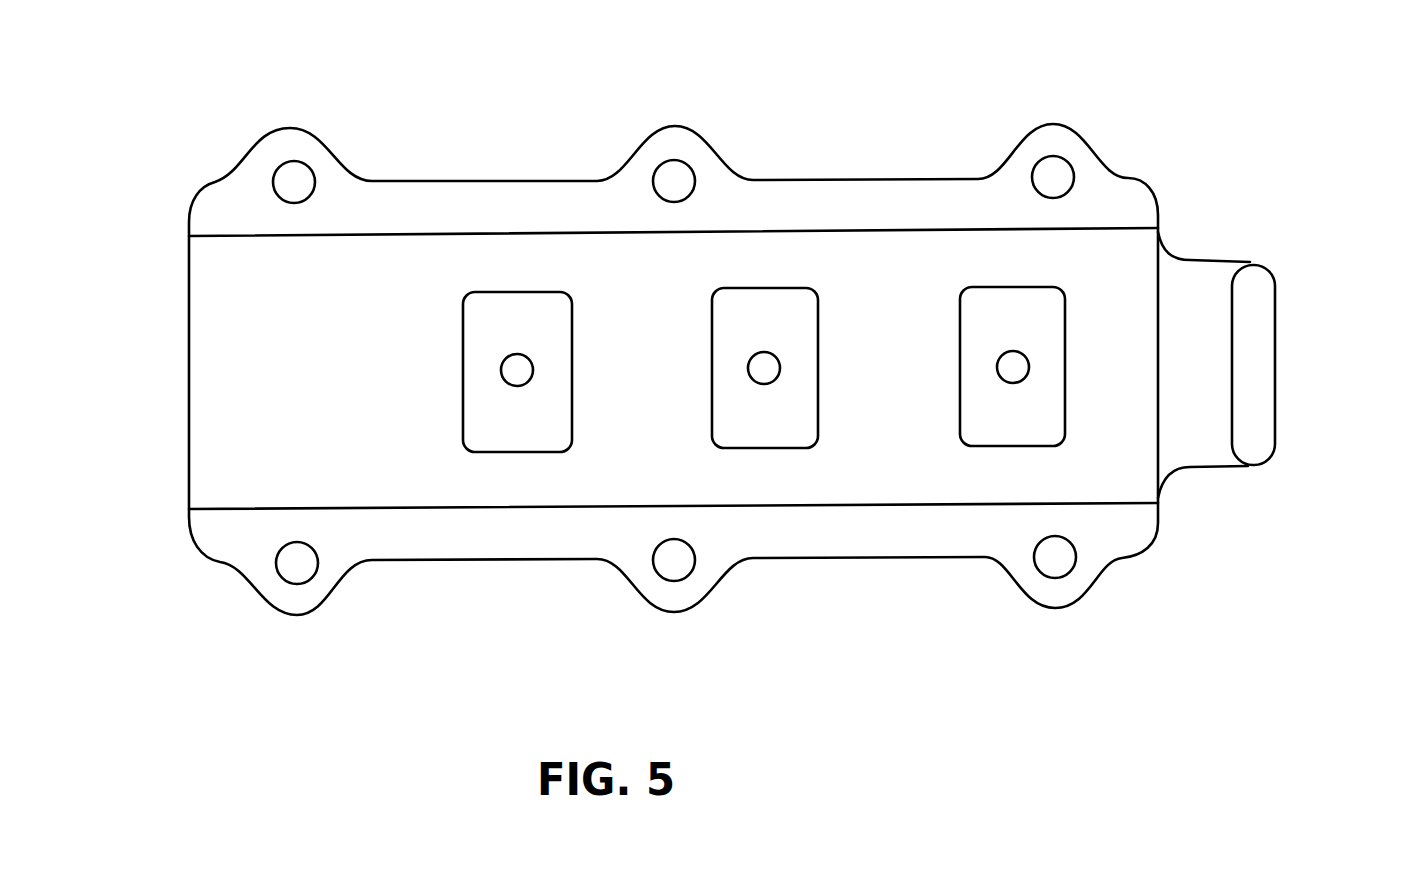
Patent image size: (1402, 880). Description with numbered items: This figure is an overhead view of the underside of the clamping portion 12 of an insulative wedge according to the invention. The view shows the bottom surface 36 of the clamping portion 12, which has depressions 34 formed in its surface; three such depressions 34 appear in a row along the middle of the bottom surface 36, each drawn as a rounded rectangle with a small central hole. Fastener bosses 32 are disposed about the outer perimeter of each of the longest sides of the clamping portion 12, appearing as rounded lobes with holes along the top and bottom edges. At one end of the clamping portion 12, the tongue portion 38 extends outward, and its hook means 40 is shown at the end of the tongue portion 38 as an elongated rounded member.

The clamping portion 12 is at (879, 642).
The fastener bosses 32 is at (285, 151).
The depressions 34 is at (508, 317).
The bottom surface 36 is at (252, 350).
The tongue portion 38 is at (1190, 257).
The hook means 40 is at (1275, 340).